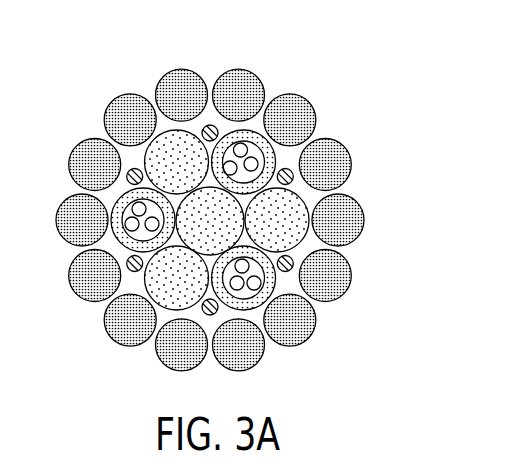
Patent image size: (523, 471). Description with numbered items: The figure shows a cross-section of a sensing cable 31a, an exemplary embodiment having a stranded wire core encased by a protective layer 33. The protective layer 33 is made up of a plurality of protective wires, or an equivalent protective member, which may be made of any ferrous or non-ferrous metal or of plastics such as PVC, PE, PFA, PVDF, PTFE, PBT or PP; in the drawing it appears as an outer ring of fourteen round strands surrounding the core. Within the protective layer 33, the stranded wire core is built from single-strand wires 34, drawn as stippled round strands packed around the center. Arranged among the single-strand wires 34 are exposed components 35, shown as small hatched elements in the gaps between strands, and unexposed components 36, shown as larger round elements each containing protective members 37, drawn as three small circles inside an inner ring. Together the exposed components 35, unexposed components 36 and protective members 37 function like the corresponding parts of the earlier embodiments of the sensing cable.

The sensing cable 31a is at (362, 50).
The protective layer 33 is at (78, 206).
The single-strand wires 34 is at (173, 296).
The exposed components 35 is at (279, 181).
The unexposed components 36 is at (261, 306).
The protective members 37 is at (243, 289).